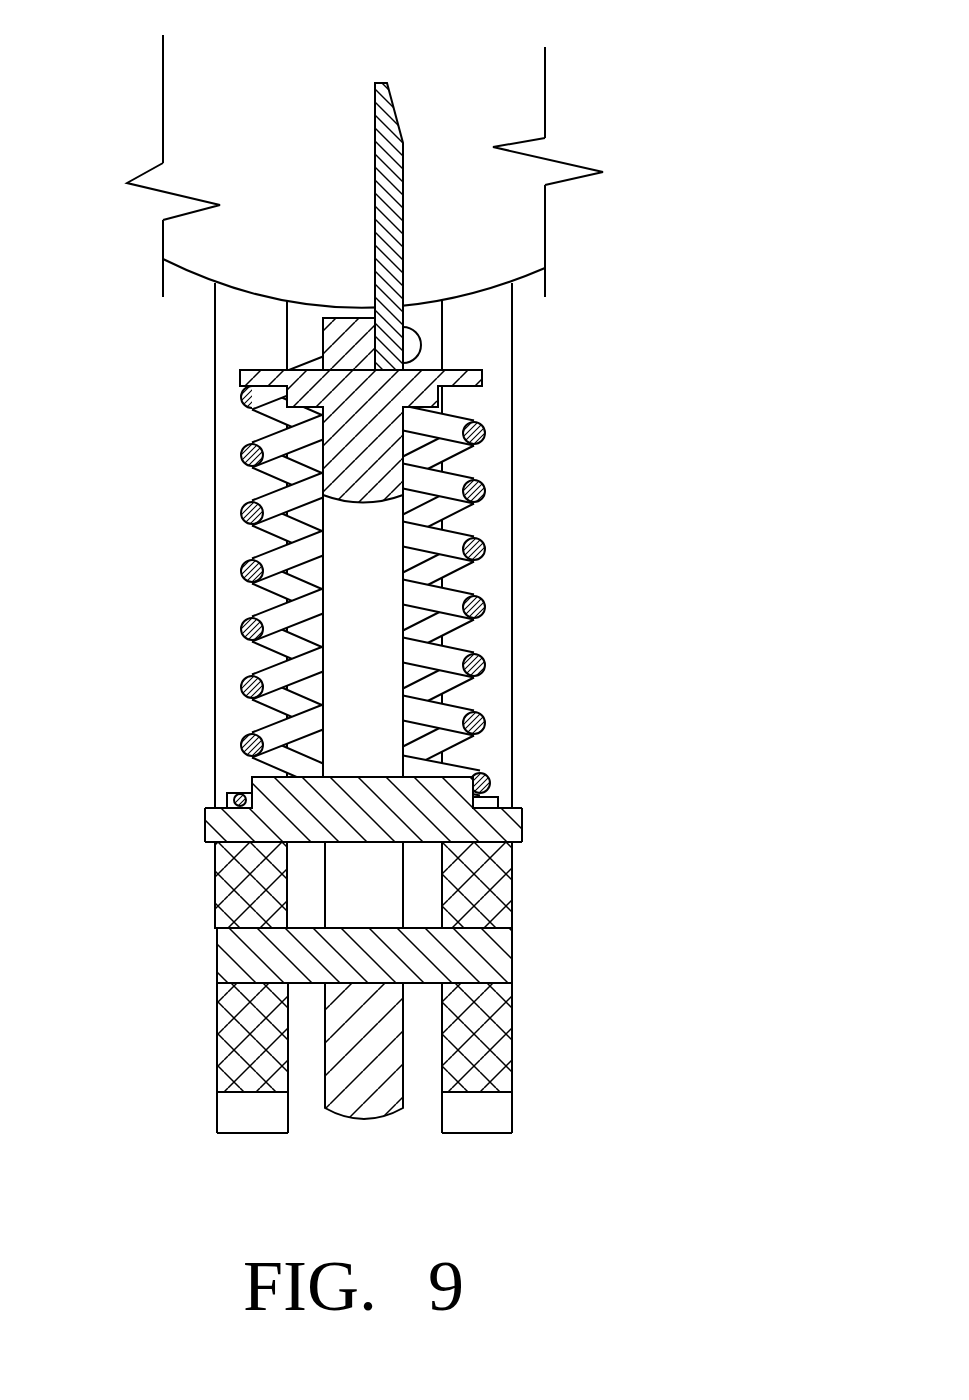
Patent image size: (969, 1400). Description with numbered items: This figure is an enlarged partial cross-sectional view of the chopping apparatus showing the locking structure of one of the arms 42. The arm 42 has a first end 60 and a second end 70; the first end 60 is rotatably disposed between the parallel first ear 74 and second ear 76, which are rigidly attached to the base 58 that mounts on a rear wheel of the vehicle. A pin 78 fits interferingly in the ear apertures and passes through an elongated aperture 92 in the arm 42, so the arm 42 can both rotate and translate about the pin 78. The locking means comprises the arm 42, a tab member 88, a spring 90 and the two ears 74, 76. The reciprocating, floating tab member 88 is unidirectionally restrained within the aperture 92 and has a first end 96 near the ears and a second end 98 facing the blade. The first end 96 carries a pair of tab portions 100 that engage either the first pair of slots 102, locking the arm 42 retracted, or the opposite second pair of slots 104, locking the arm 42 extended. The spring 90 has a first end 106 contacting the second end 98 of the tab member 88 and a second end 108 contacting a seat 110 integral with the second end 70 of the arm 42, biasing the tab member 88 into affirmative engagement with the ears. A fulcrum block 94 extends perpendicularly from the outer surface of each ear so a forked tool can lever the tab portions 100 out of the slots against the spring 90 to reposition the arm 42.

The arm 42 is at (390, 488).
The base 58 is at (517, 270).
The first end 60 is at (408, 1050).
The second end 70 is at (430, 372).
The first ear 74 is at (513, 1110).
The second ear 76 is at (217, 1110).
The pin 78 is at (498, 960).
The tab member 88 is at (498, 828).
The spring 90 is at (417, 617).
The elongated aperture 92 is at (445, 563).
The fulcrum block 94 is at (405, 140).
The first end of the tab member 96 is at (310, 843).
The second end of the tab member 98 is at (283, 758).
The tab portions 100 is at (205, 817).
The first pair of slots 102 is at (230, 797).
The second pair of slots 104 is at (240, 1135).
The first end of the spring 106 is at (207, 838).
The second end of the spring 108 is at (245, 395).
The seat 110 is at (483, 377).